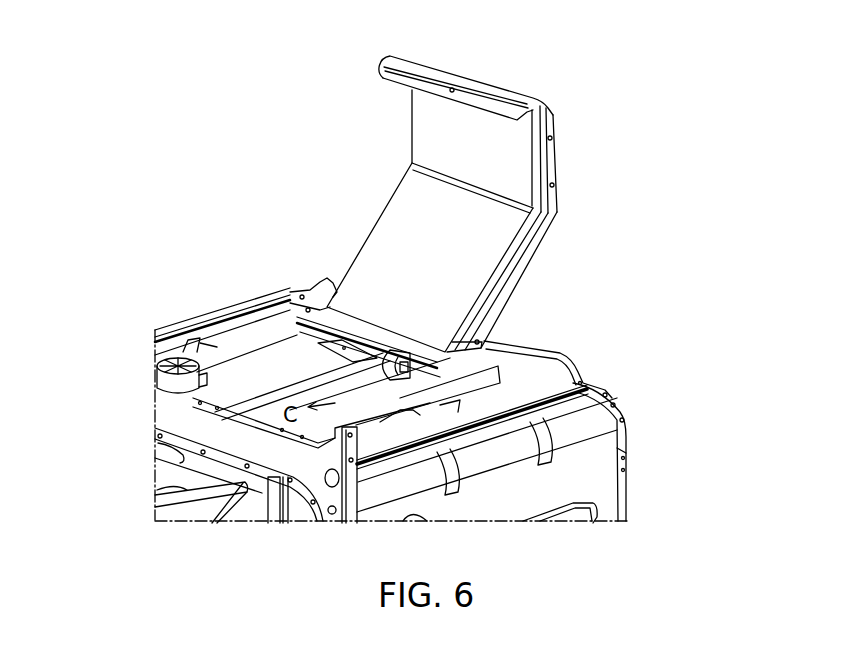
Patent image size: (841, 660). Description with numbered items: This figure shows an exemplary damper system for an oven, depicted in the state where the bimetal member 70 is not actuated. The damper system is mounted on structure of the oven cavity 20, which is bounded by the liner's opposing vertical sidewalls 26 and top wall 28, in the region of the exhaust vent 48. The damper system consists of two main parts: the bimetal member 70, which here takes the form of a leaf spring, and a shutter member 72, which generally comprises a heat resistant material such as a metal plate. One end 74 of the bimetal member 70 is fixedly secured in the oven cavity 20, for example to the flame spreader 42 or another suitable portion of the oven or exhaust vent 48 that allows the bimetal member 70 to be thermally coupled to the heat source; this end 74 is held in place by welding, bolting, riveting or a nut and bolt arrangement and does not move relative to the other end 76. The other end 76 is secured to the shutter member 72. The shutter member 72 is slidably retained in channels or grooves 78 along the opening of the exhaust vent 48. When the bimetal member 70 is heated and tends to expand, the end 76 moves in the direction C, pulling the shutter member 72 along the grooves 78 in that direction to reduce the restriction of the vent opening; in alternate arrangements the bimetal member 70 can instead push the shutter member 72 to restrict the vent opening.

The oven cavity 20 is at (237, 490).
The vertical sidewalls 26 is at (157, 512).
The top wall 28 is at (155, 460).
The flame spreader 42 is at (238, 362).
The exhaust vent 48 is at (555, 104).
The bimetal member 70 is at (377, 370).
The shutter member 72 is at (436, 353).
The end 74 is at (406, 382).
The end 76 is at (391, 352).
The channels or grooves 78 is at (313, 292).